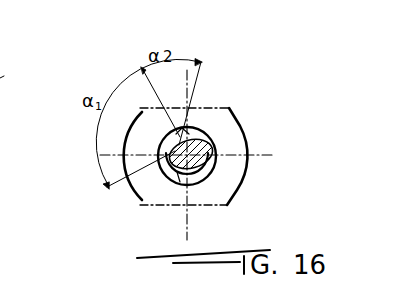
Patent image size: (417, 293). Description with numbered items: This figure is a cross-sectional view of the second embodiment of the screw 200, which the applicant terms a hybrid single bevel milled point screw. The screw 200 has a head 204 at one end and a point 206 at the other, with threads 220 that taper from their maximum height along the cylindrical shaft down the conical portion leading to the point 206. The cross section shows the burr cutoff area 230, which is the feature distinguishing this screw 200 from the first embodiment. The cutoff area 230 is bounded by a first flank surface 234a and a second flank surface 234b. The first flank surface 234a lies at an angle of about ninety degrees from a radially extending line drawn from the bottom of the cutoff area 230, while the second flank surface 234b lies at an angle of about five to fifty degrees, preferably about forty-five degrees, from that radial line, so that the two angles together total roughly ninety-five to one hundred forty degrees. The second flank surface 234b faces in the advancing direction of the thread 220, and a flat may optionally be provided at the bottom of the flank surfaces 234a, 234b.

The screw 200 is at (250, 112).
The head 204 is at (230, 188).
The point 206 is at (13, 154).
The threads 220 is at (206, 134).
The burr cutoff area 230 is at (163, 140).
The first flank surface 234a is at (163, 137).
The second flank surface 234b is at (176, 134).